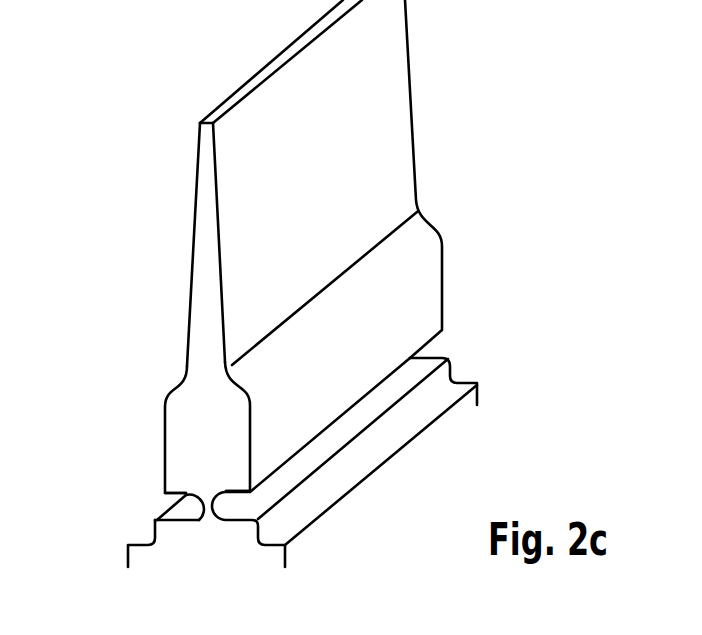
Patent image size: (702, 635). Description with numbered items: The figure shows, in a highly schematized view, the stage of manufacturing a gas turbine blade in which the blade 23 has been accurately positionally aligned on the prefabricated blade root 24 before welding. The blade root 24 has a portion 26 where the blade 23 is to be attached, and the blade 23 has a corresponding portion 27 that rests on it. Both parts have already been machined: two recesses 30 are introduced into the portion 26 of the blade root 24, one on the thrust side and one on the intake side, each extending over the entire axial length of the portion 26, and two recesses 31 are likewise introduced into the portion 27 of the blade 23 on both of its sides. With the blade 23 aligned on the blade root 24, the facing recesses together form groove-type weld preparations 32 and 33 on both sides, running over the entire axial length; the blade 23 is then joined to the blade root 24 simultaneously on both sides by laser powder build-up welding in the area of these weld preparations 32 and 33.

The blade 23 is at (388, 97).
The blade root 24 is at (147, 557).
The portion 26 is at (167, 532).
The portion 27 is at (182, 425).
The recess 30 is at (184, 536).
The recess 31 is at (178, 484).
The groove-type weld preparation 32 is at (252, 506).
The groove-type weld preparation 33 is at (148, 500).